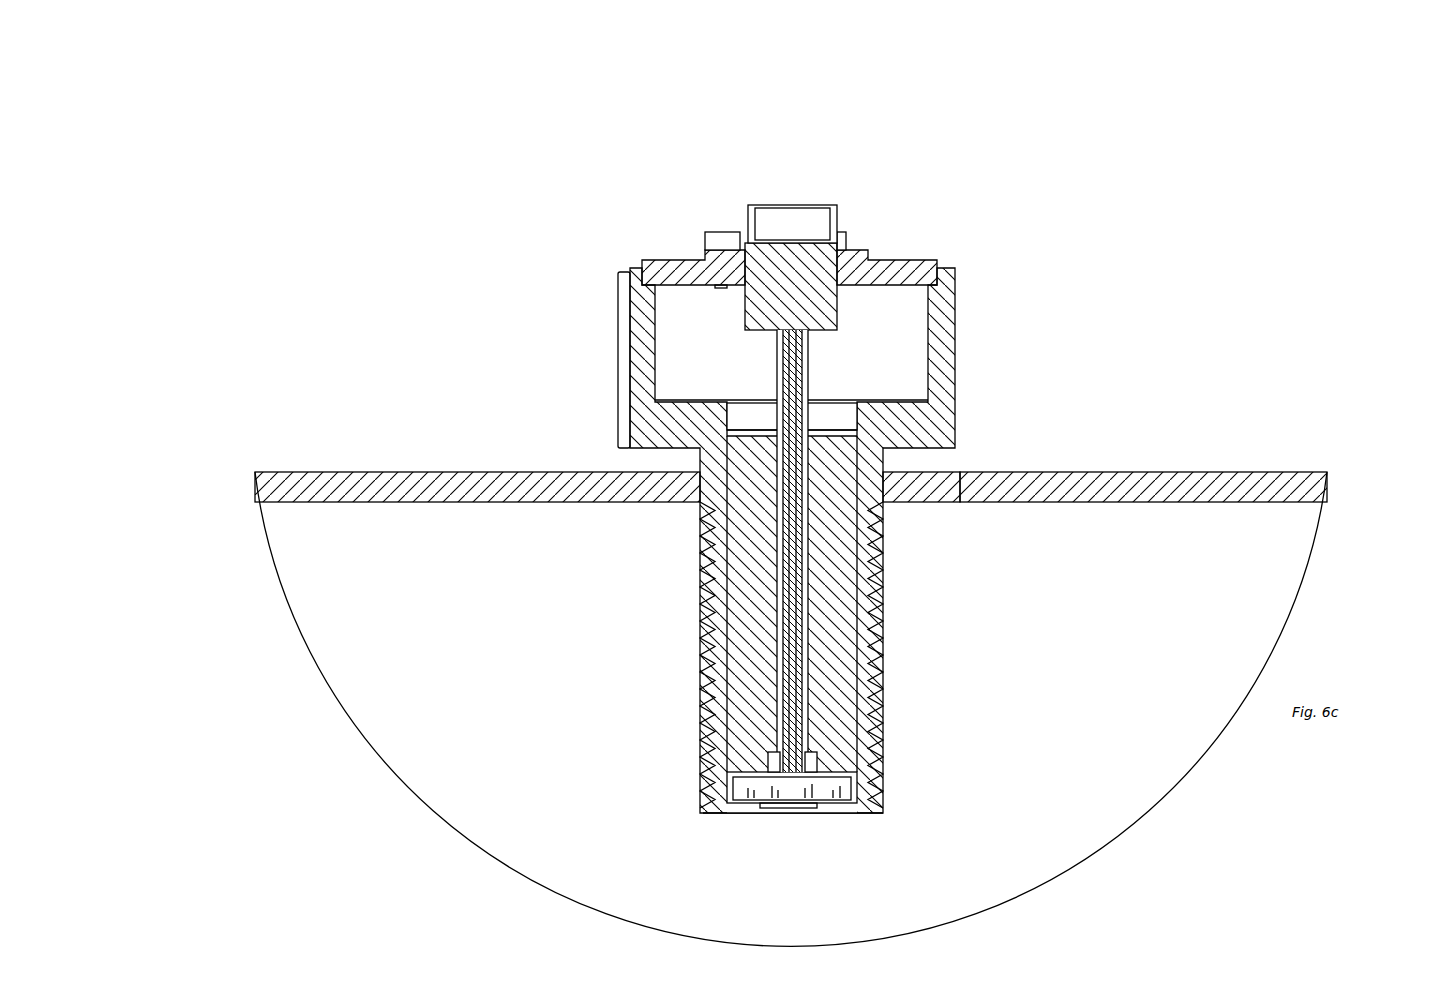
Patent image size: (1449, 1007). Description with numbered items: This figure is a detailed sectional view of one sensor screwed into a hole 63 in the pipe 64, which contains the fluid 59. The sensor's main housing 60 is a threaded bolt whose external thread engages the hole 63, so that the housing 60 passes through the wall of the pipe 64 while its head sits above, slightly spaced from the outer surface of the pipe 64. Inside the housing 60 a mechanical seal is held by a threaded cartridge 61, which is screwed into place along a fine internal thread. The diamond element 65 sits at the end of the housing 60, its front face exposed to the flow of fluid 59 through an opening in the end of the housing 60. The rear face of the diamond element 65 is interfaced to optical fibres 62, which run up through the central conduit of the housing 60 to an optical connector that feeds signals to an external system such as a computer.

The fluid 59 is at (480, 713).
The main housing 60 is at (708, 687).
The threaded cartridge 61 is at (745, 545).
The optical fibres 62 is at (810, 355).
The hole 63 is at (887, 488).
The pipe 64 is at (1018, 490).
The diamond element 65 is at (842, 790).